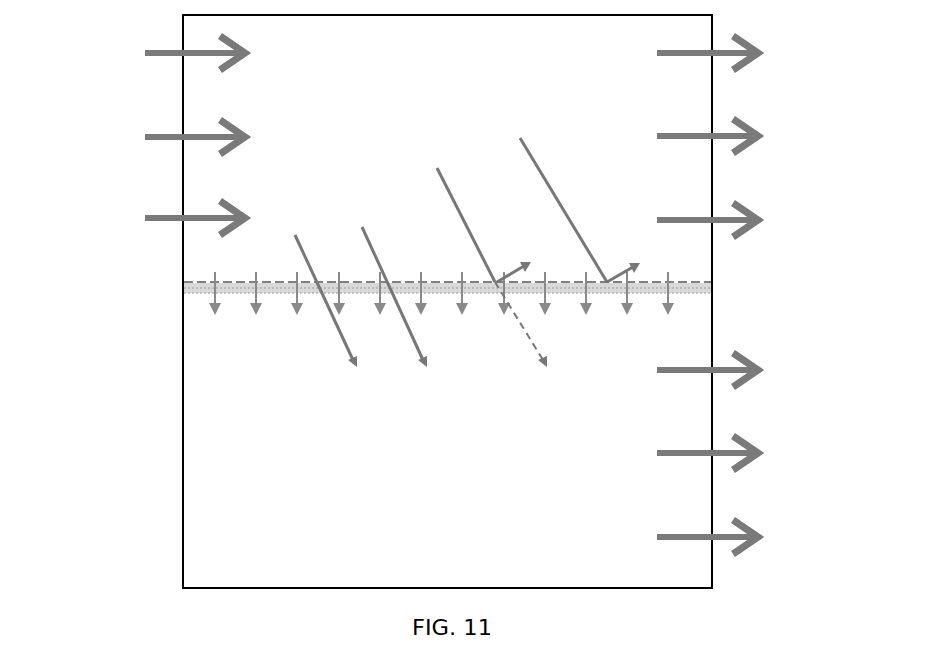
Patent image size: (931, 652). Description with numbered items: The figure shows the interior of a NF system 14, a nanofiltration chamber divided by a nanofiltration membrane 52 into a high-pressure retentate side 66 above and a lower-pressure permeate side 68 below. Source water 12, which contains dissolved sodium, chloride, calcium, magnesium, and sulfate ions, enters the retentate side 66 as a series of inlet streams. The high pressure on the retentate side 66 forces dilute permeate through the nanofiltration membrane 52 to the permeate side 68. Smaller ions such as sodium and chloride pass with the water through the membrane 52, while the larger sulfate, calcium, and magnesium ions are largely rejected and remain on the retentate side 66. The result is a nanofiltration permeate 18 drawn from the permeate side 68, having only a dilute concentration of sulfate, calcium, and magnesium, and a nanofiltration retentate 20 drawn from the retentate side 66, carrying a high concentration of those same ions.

The NF system 14 is at (112, 64).
The source water 12 is at (160, 53).
The nanofiltration retentate 20 is at (723, 53).
The nanofiltration permeate 18 is at (723, 370).
The nanofiltration membrane 52 is at (400, 283).
The retentate side 66 is at (465, 116).
The permeate side 68 is at (465, 441).